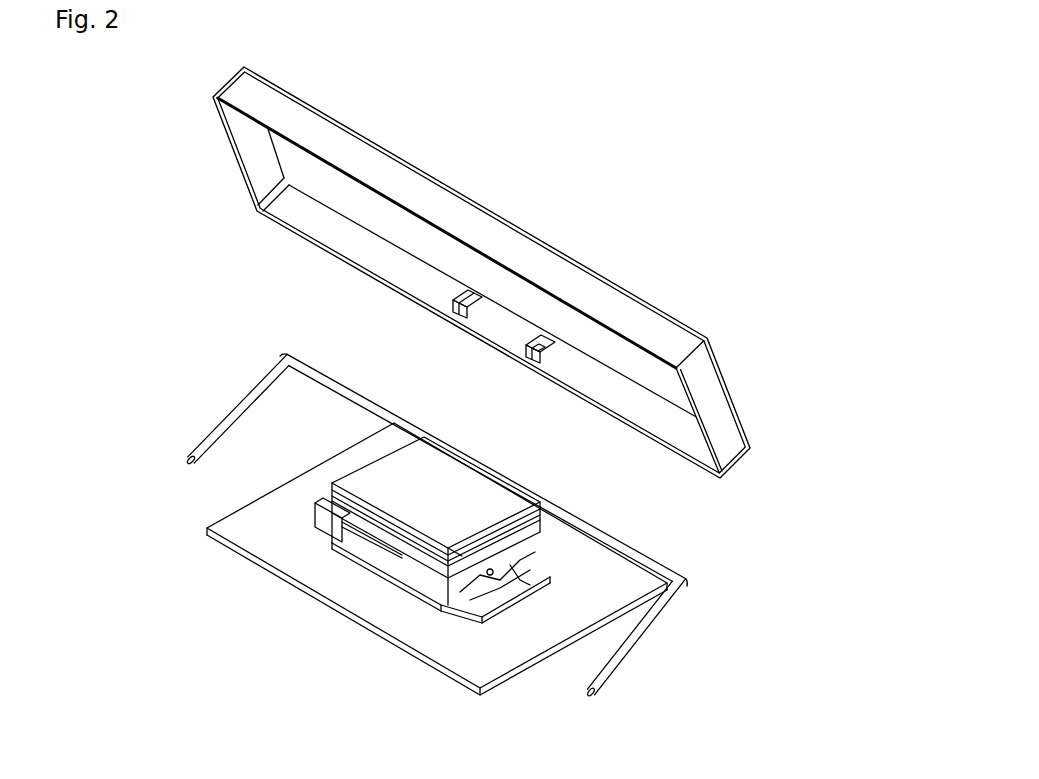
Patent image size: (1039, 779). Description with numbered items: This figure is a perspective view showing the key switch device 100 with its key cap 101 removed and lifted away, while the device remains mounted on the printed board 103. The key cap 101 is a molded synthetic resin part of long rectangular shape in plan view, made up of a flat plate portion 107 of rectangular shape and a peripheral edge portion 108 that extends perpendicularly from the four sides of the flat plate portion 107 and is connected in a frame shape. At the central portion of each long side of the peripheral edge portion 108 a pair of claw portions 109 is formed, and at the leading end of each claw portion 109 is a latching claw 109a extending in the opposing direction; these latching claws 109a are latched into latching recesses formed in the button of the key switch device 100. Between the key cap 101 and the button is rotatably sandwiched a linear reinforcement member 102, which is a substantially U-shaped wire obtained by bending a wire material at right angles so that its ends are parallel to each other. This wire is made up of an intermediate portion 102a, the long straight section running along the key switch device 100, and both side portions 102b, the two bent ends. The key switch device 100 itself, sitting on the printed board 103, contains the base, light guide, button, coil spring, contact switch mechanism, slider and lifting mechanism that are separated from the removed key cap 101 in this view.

The key switch device 100 is at (382, 583).
The key cap 101 is at (397, 167).
The linear reinforcement member 102 is at (462, 526).
The intermediate portion 102a is at (387, 412).
The side portion 102b is at (218, 412).
The printed board 103 is at (288, 563).
The flat plate portion 107 is at (588, 332).
The peripheral edge portion 108 is at (647, 330).
The claw portion 109 is at (555, 349).
The latching claw 109a is at (536, 350).